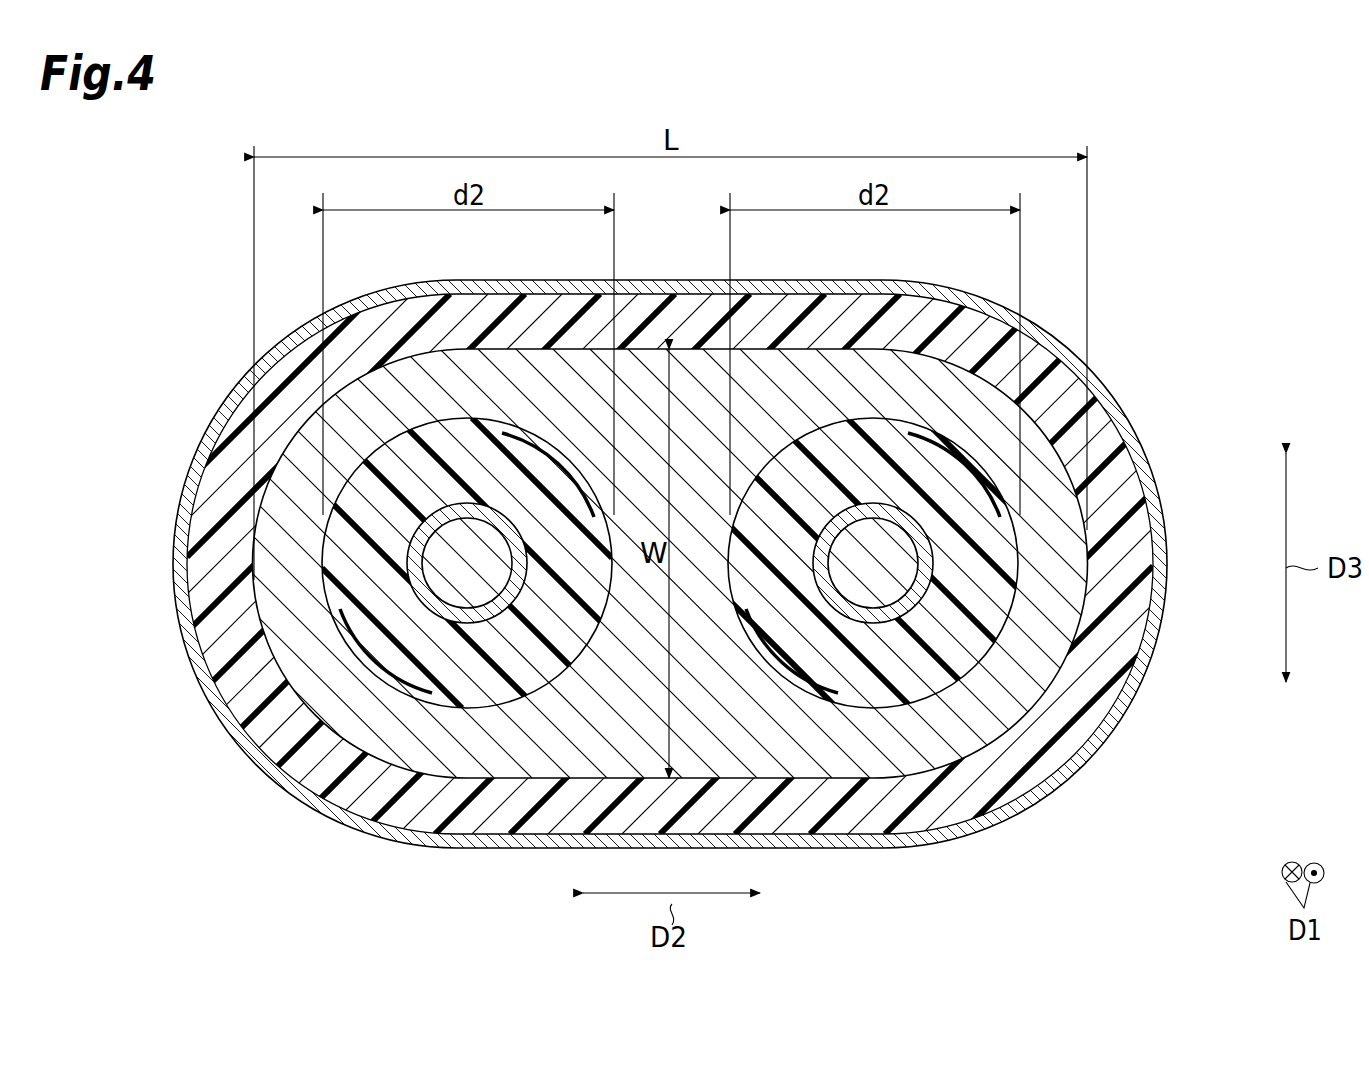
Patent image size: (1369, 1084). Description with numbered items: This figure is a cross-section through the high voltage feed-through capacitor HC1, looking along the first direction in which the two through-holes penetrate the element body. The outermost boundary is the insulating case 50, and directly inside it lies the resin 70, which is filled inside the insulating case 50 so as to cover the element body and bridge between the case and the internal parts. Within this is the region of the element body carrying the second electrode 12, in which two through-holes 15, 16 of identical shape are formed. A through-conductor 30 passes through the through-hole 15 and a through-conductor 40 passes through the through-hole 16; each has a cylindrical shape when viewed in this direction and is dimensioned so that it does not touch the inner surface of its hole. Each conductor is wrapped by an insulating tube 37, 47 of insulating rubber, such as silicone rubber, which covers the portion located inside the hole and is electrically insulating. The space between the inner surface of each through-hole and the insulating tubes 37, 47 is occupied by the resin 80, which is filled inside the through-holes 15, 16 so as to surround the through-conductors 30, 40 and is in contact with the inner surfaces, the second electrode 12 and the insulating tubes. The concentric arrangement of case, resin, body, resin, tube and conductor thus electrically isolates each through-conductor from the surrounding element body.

The high voltage feed-through capacitor HC1 is at (1152, 311).
The insulating case 50 is at (1127, 397).
The resin 70 is at (313, 780).
The second electrode 12 is at (1000, 715).
The through-hole 15 is at (461, 447).
The through-hole 16 is at (896, 449).
The resin 80 is at (468, 690).
The through-conductor 30 is at (437, 568).
The insulating tube 37 is at (422, 597).
The through-conductor 40 is at (900, 562).
The insulating tube 47 is at (917, 592).